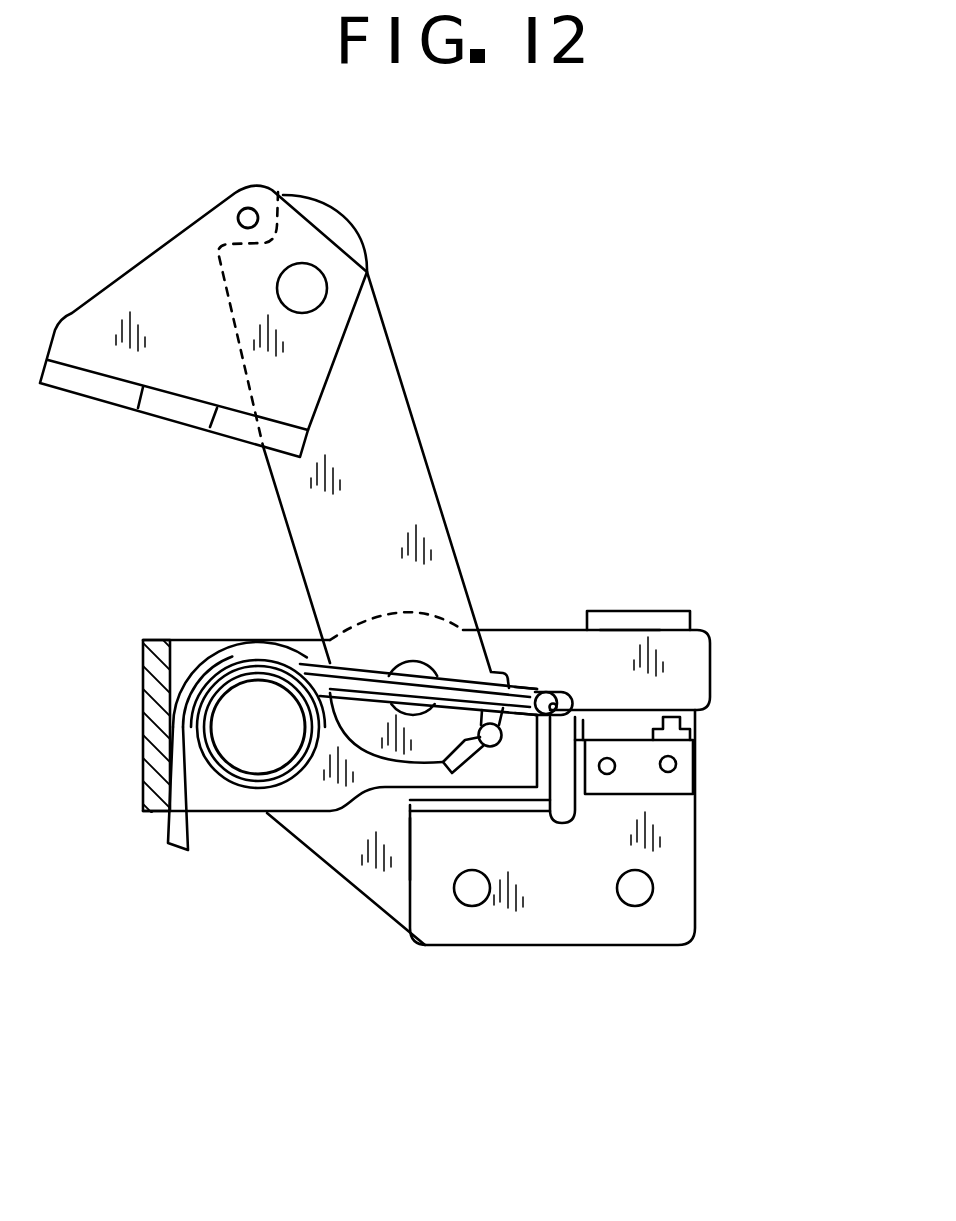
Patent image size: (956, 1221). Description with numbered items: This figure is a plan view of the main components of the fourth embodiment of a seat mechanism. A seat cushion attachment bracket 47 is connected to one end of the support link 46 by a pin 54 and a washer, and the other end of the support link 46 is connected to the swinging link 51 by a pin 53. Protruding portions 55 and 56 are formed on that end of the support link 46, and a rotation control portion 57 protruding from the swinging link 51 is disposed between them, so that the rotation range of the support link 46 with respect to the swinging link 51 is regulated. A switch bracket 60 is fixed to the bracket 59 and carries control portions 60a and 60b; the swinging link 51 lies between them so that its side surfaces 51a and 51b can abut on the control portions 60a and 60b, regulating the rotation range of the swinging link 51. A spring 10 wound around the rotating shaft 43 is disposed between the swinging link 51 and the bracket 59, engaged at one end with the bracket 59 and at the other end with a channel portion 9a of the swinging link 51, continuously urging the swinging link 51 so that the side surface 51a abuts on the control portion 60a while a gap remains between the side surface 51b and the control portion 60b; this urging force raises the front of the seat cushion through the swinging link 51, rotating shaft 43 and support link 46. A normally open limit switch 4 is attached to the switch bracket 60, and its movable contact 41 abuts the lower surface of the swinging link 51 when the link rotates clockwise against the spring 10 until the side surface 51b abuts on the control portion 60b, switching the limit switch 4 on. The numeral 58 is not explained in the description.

The limit switch 4 is at (683, 780).
The channel portion 9a is at (548, 700).
The spring 10 is at (170, 835).
The movable contact 41 is at (693, 718).
The rotating shaft 43 is at (253, 742).
The support link 46 is at (385, 438).
The seat cushion attachment bracket 47 is at (140, 287).
The swinging link 51 is at (677, 658).
The side surface 51a is at (620, 628).
The side surface 51b is at (510, 797).
The pin 53 is at (413, 661).
The pin 54 is at (313, 292).
The protruding portion 55 is at (500, 672).
The protruding portion 56 is at (443, 762).
The rotation control portion 57 is at (512, 708).
The stopper pin 58 is at (577, 708).
The bracket 59 is at (155, 748).
The switch bracket 60 is at (677, 903).
The control portion 60a is at (683, 617).
The control portion 60b is at (440, 812).